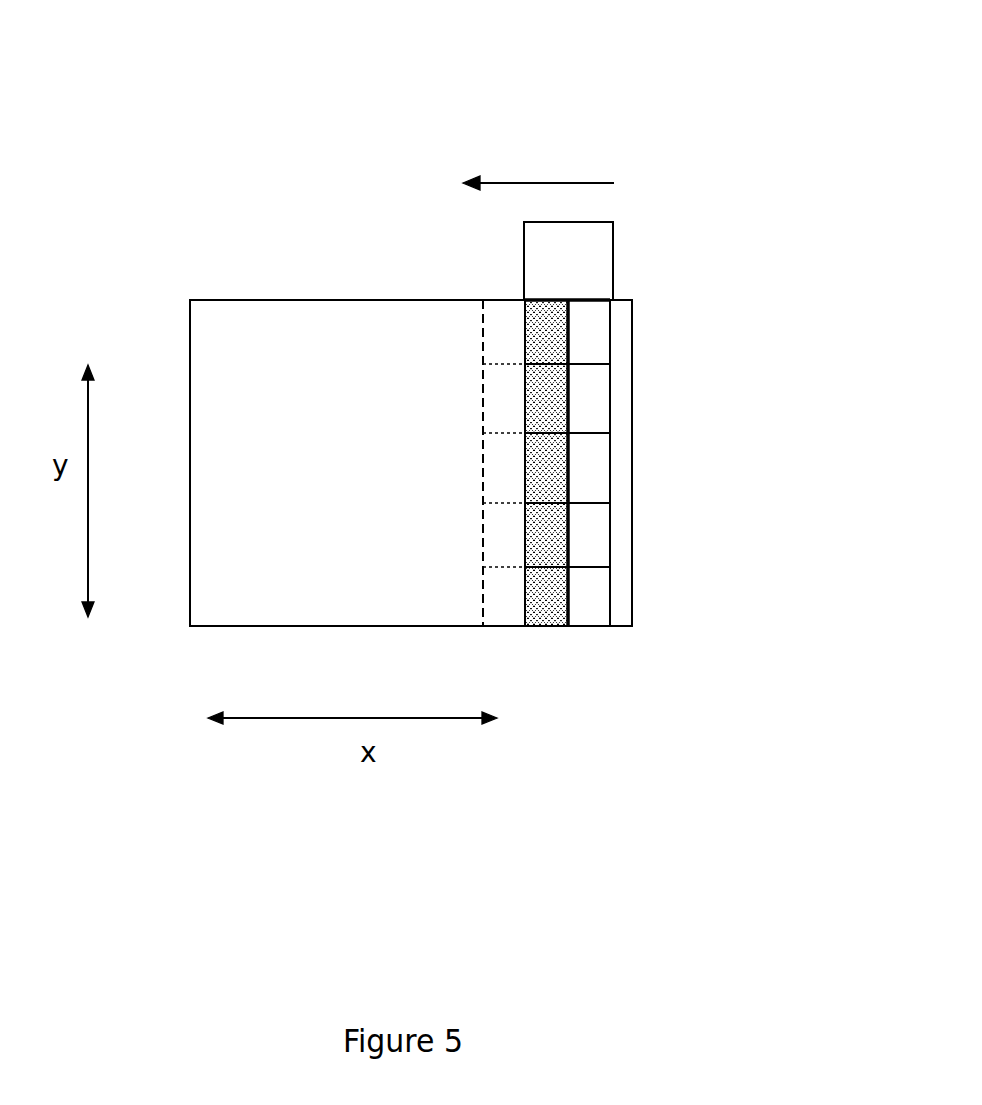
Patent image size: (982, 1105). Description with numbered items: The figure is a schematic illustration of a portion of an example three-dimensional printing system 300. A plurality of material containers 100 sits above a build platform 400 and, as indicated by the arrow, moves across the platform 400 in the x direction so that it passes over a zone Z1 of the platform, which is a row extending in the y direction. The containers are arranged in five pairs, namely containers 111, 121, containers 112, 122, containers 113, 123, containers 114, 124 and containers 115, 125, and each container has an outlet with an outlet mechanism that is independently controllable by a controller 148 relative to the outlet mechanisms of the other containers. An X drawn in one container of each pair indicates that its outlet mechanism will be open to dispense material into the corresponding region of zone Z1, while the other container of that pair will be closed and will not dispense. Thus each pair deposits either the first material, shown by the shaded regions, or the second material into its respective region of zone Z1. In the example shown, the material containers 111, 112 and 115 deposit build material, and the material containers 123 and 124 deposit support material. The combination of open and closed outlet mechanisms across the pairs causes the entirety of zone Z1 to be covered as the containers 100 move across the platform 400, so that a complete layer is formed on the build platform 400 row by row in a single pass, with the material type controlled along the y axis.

The 3D printing system 300 is at (538, 52).
The build platform 400 is at (277, 300).
The controller 148 is at (597, 278).
The plurality of material containers 100 is at (605, 632).
The zone Z1 is at (483, 600).
The material container 111 is at (610, 342).
The material container 121 is at (692, 332).
The material container 112 is at (610, 404).
The material container 122 is at (692, 398).
The material container 113 is at (610, 478).
The material container 123 is at (692, 468).
The material container 114 is at (610, 543).
The material container 124 is at (692, 535).
The material container 115 is at (610, 597).
The material container 125 is at (692, 597).